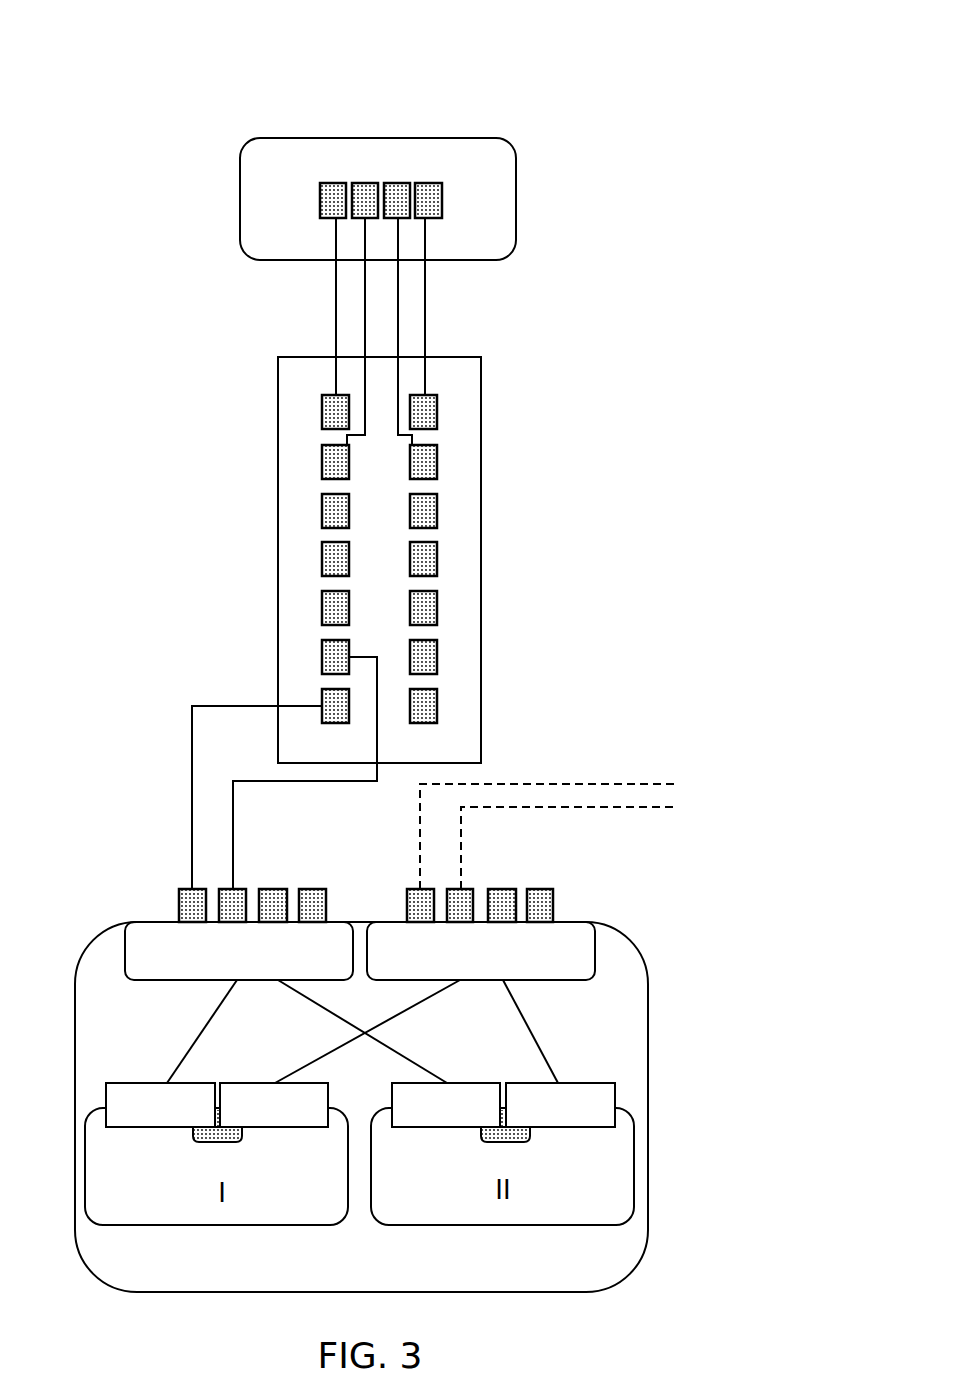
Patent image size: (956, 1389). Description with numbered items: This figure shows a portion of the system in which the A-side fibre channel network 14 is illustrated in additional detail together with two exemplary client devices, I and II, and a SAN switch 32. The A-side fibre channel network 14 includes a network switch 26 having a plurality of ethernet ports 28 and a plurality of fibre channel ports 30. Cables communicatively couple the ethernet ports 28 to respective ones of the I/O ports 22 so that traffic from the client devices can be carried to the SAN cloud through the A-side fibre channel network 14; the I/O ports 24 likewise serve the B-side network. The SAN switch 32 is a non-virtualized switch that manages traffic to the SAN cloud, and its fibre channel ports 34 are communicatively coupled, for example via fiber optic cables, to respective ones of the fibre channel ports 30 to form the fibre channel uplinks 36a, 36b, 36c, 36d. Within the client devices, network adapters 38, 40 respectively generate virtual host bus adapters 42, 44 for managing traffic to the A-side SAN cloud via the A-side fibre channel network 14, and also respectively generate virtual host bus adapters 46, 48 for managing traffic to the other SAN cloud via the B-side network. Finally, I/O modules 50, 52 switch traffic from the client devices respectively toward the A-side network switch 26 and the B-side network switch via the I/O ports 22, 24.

The A-side fibre channel network 14 is at (609, 275).
The I/O ports 22 is at (178, 910).
The I/O ports 24 is at (407, 903).
The network switch 26 is at (487, 545).
The ethernet ports 28 is at (440, 558).
The fibre channel ports 30 is at (322, 462).
The SAN switch 32 is at (497, 138).
The fibre channel ports 34 is at (336, 183).
The fibre channel uplink 36a is at (330, 328).
The fibre channel uplink 36b is at (363, 305).
The fibre channel uplink 36c is at (437, 323).
The fibre channel uplink 36d is at (400, 296).
The network adapter 38 is at (243, 1145).
The network adapter 40 is at (530, 1143).
The virtual host bus adapter 42 is at (145, 1119).
The virtual host bus adapter 44 is at (431, 1119).
The virtual host bus adapter 46 is at (259, 1119).
The virtual host bus adapter 48 is at (545, 1119).
The I/O module 50 is at (233, 967).
The I/O module 52 is at (455, 967).